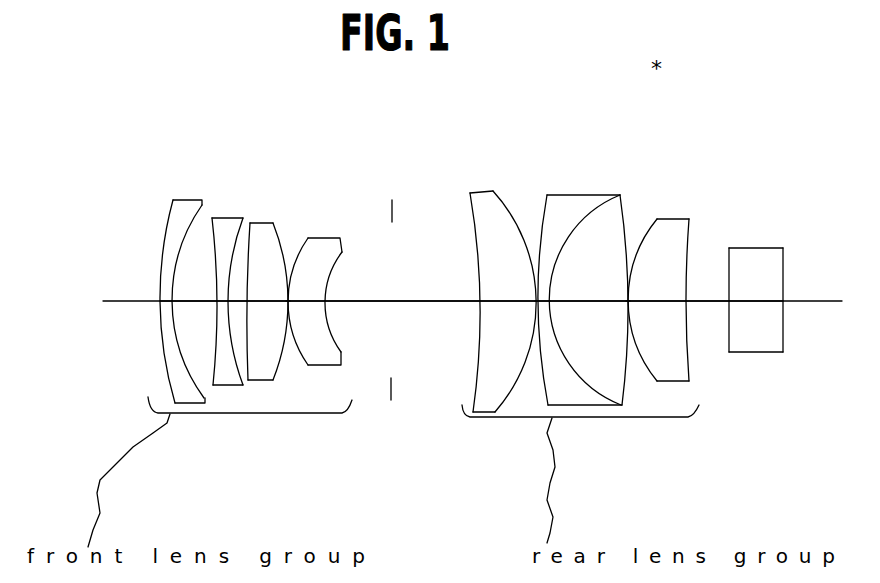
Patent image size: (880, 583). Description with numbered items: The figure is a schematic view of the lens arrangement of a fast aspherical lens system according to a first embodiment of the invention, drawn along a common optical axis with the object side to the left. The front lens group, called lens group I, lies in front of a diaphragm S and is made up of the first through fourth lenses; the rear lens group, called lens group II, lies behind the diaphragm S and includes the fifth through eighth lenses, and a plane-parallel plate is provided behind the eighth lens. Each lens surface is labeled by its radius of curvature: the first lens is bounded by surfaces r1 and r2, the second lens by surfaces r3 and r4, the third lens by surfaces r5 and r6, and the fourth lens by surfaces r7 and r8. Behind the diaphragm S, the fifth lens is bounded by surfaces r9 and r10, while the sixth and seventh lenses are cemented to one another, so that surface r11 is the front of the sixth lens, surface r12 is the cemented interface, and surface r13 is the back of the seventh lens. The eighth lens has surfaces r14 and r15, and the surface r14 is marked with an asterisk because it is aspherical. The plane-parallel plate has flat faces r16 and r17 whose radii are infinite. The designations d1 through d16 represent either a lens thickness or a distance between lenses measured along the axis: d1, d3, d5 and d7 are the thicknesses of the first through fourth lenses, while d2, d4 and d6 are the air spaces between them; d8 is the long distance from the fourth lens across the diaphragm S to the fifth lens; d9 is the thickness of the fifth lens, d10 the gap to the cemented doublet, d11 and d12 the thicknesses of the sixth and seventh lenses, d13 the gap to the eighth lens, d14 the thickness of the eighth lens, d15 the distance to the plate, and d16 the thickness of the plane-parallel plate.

The radius of curvature of first lens surface r1 is at (141, 243).
The radius of curvature of second lens surface r2 is at (173, 241).
The radius of curvature of third lens surface r3 is at (197, 234).
The radius of curvature of fourth lens surface r4 is at (228, 234).
The radius of curvature of fifth lens surface r5 is at (257, 232).
The radius of curvature of sixth lens surface r6 is at (288, 232).
The radius of curvature of seventh lens surface r7 is at (314, 224).
The radius of curvature of eighth lens surface r8 is at (351, 218).
The radius of curvature of ninth lens surface r9 is at (438, 248).
The radius of curvature of tenth lens surface r10 is at (484, 248).
The radius of curvature of eleventh lens surface r11 is at (515, 244).
The radius of curvature of twelfth lens surface r12 is at (579, 244).
The radius of curvature of thirteenth lens surface r13 is at (608, 244).
The radius of curvature of fourteenth lens surface r14 is at (645, 232).
The radius of curvature of fifteenth lens surface r15 is at (698, 232).
The radius of curvature of sixteenth surface r16 is at (747, 218).
The radius of curvature of seventeenth surface r17 is at (801, 218).
The diaphragm S is at (392, 220).
The lens thickness d1 is at (148, 416).
The distance between lenses d2 is at (188, 416).
The lens thickness d3 is at (211, 416).
The distance between lenses d4 is at (239, 416).
The lens thickness d5 is at (267, 416).
The distance between lenses d6 is at (305, 416).
The lens thickness d7 is at (323, 416).
The distance between lenses d8 is at (402, 416).
The lens thickness d9 is at (473, 416).
The distance between lenses d10 is at (492, 416).
The lens thickness d11 is at (525, 416).
The lens thickness d12 is at (589, 416).
The distance between lenses d13 is at (621, 416).
The lens thickness d14 is at (657, 416).
The distance between lenses d15 is at (712, 416).
The lens thickness d16 is at (760, 416).